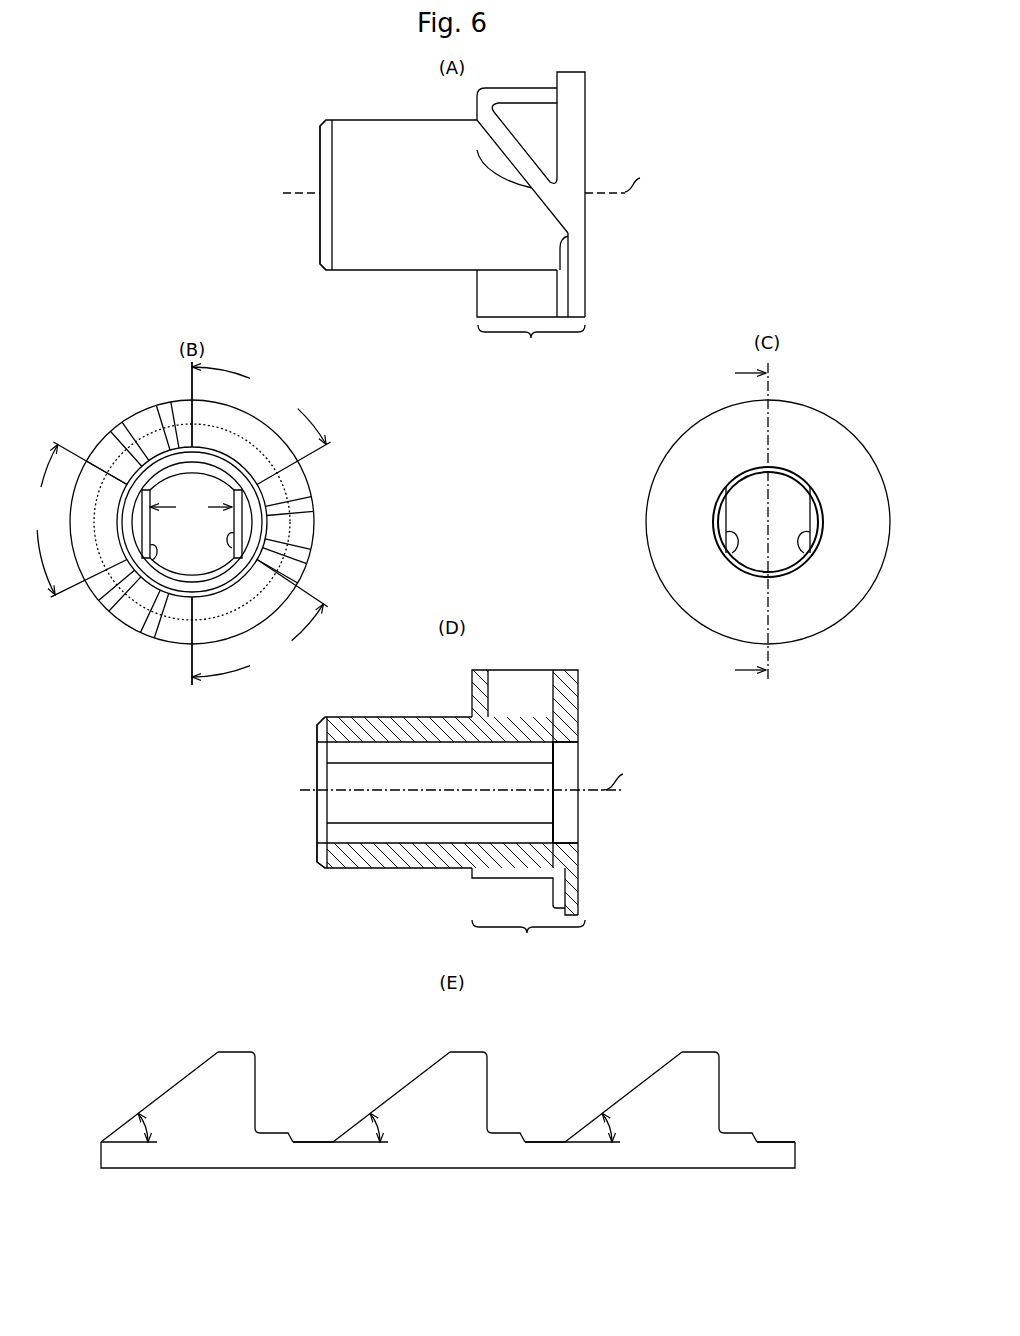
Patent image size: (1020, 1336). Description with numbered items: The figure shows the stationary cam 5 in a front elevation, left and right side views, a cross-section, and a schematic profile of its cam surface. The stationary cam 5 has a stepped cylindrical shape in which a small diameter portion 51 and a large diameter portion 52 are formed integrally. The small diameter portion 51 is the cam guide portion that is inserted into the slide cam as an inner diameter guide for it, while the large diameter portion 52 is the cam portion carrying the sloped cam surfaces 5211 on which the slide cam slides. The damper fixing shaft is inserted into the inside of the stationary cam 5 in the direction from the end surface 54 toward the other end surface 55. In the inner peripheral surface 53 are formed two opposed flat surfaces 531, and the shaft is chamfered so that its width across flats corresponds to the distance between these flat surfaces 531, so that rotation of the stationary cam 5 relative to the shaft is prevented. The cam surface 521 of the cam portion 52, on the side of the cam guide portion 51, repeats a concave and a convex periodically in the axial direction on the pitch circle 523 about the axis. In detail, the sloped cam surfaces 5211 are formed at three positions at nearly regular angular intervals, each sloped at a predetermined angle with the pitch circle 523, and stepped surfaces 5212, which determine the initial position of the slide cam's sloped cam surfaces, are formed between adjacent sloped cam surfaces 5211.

The stationary cam 5 is at (627, 82).
The small diameter portion 51 is at (345, 120).
The large diameter portion 52 is at (308, 560).
The cam surface 521 is at (107, 460).
The sloped cam surface 5211 is at (484, 149).
The stepped surface 5212 is at (565, 251).
The pitch circle 523 is at (143, 430).
The inner peripheral surface 53 is at (352, 772).
The flat surface 531 is at (226, 535).
The end surface 54 is at (586, 152).
The end surface 55 is at (318, 233).